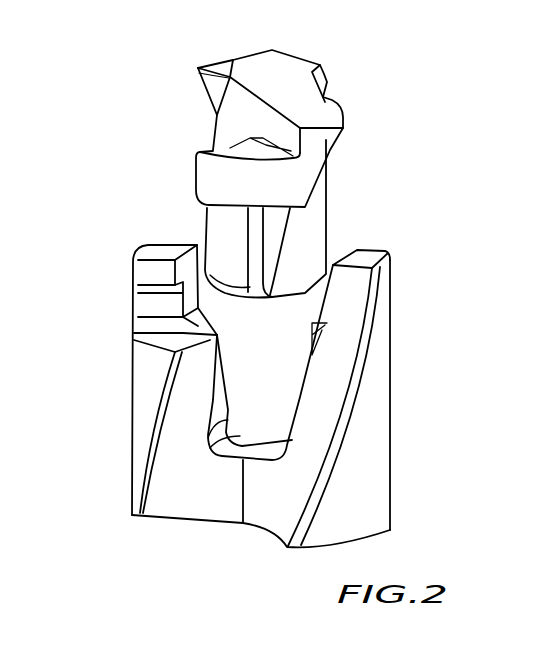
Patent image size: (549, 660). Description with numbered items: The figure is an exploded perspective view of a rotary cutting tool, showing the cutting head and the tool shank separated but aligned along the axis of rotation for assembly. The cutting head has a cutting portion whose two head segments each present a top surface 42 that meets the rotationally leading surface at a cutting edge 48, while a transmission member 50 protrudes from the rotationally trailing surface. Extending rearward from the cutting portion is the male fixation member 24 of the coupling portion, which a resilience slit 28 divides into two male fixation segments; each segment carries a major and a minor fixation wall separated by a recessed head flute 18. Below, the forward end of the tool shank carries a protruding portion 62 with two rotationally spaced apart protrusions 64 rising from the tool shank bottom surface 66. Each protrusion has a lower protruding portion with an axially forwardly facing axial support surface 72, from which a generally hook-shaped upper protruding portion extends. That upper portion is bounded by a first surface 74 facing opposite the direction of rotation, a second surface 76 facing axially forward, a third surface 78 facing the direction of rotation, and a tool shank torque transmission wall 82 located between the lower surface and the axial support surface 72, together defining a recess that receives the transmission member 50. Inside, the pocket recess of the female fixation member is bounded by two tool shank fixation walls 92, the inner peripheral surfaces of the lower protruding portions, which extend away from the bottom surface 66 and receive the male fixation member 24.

The head flute 18 is at (302, 236).
The male fixation member 24 is at (337, 198).
The resilience slit 28 is at (253, 258).
The top surface 42 is at (280, 77).
The cutting edge 48 is at (198, 74).
The transmission member 50 is at (217, 182).
The protruding portion 62 is at (127, 337).
The protrusion 64 is at (127, 297).
The tool shank bottom surface 66 is at (255, 445).
The axial support surface 72 is at (160, 340).
The first surface 74 is at (358, 280).
The second surface 76 is at (150, 252).
The third surface 78 is at (157, 272).
The tool shank torque transmission wall 82 is at (148, 300).
The tool shank fixation wall 92 is at (215, 400).